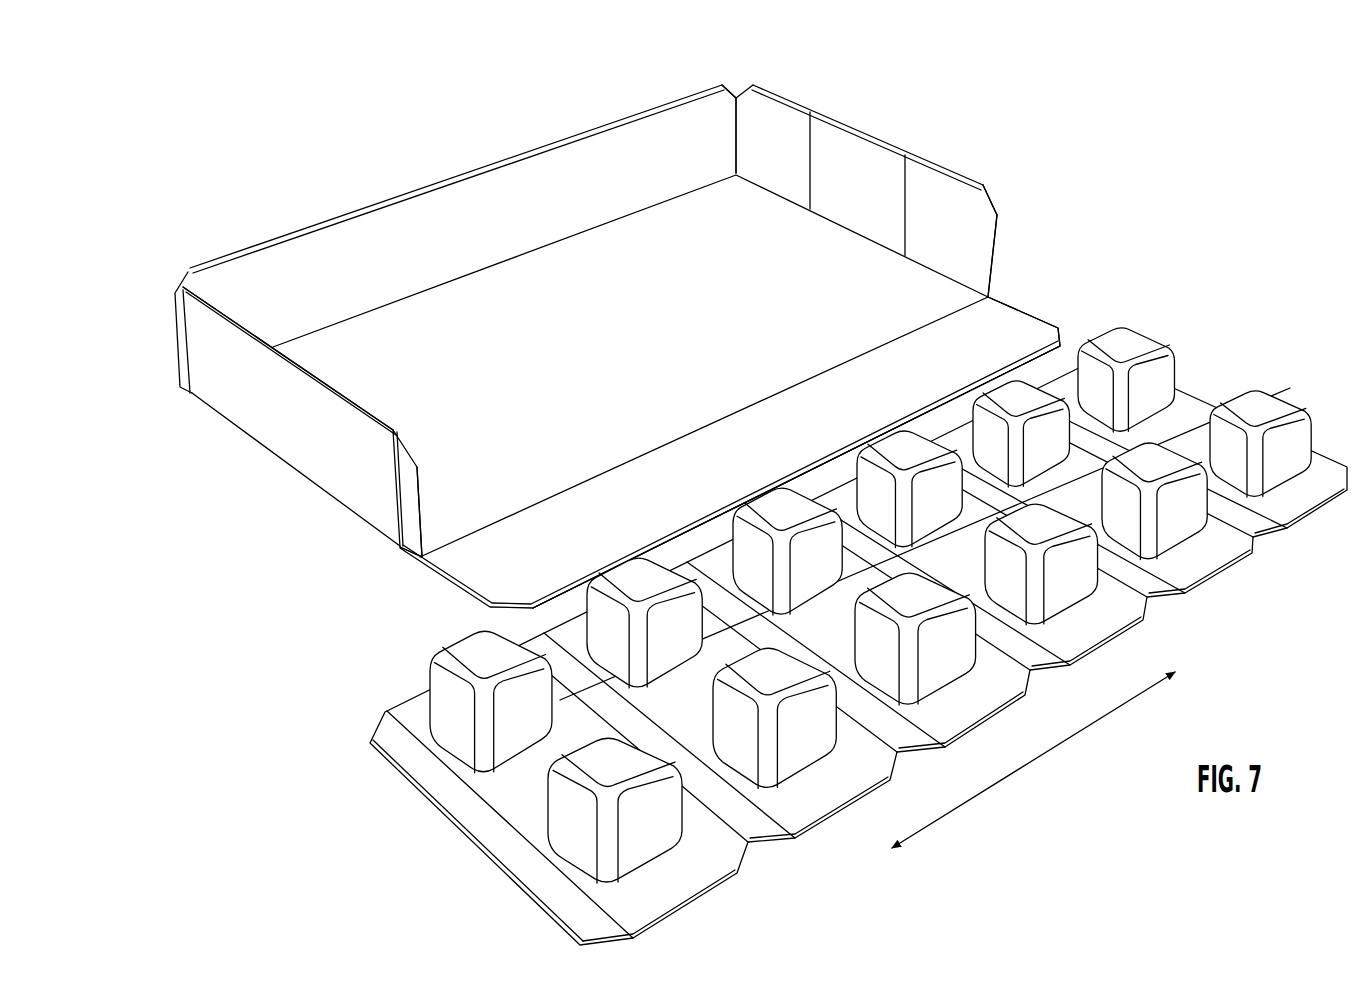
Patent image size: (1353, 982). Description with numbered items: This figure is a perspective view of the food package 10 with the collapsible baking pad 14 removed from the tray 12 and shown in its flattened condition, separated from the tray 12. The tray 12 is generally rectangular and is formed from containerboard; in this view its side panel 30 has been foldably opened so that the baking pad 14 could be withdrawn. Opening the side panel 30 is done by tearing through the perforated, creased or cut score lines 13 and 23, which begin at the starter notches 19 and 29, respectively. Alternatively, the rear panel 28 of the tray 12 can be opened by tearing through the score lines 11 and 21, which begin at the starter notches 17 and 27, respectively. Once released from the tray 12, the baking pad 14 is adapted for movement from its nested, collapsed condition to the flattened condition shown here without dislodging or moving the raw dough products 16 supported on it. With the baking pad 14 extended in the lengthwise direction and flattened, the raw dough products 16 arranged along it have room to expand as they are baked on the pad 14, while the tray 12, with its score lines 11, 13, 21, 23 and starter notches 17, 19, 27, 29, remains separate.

The food package 10 is at (1078, 148).
The score line 11 is at (180, 347).
The tray 12 is at (868, 150).
The score line 13 is at (420, 510).
The collapsible baking pad 14 is at (686, 912).
The raw dough products 16 is at (1263, 405).
The starter notch 17 is at (182, 283).
The starter notch 19 is at (393, 457).
The score line 21 is at (743, 137).
The score line 23 is at (1000, 250).
The starter notch 27 is at (735, 96).
The rear panel 28 is at (425, 213).
The starter notch 29 is at (993, 200).
The side panel 30 is at (1022, 333).